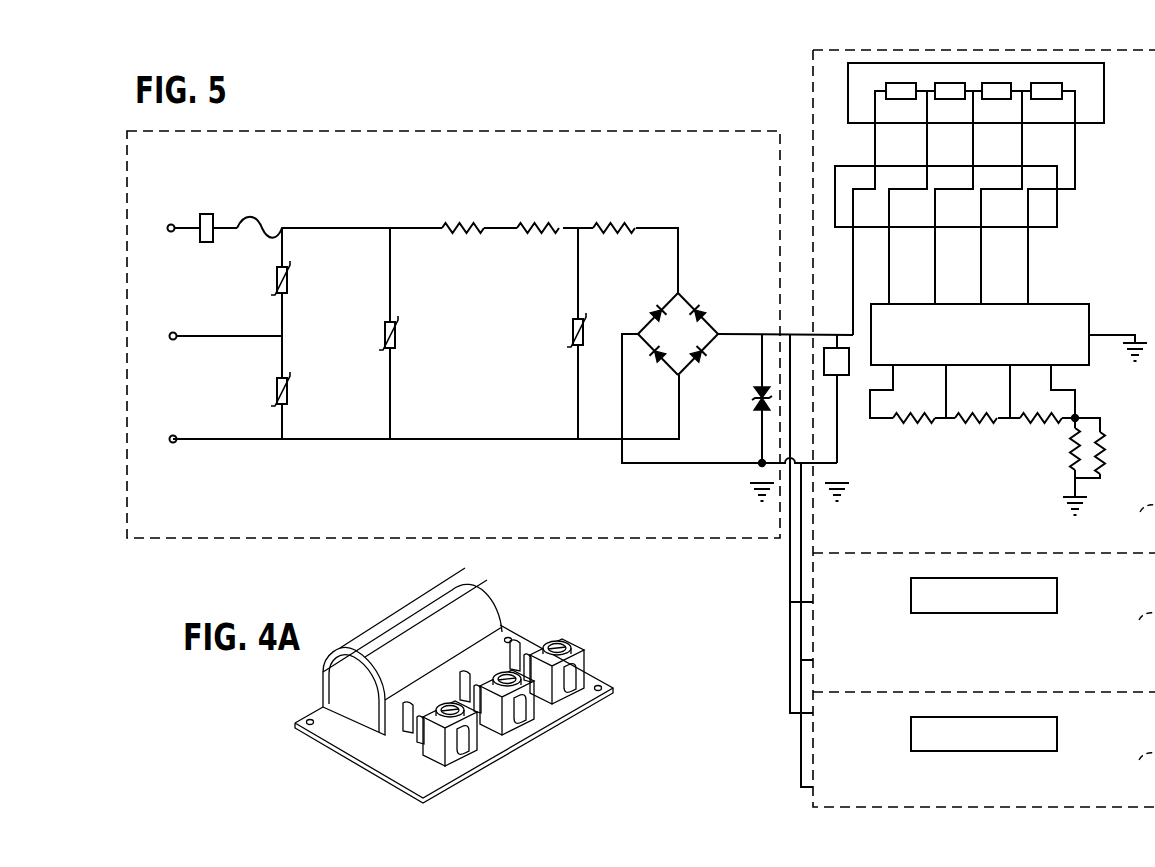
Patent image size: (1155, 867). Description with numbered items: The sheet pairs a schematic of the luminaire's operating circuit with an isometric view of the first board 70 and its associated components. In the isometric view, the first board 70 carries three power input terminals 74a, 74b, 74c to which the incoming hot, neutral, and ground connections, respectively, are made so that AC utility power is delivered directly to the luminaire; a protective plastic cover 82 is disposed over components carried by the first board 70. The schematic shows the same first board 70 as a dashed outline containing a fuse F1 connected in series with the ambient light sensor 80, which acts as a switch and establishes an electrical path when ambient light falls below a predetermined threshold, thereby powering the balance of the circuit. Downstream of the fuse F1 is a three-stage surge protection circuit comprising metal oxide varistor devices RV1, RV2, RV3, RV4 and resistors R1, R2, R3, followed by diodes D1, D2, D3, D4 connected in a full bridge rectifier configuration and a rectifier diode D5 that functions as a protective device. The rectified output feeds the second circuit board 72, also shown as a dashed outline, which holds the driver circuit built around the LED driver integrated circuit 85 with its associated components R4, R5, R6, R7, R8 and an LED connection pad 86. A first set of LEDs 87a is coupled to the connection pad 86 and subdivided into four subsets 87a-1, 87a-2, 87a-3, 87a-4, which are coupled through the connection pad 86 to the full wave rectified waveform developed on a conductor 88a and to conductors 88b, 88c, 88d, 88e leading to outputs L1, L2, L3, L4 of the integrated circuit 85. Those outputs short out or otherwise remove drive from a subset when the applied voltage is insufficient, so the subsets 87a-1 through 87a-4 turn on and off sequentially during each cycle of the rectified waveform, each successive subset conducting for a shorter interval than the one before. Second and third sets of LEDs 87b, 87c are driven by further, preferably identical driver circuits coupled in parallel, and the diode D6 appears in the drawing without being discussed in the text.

In FIG. 5, the first board 70 is at (413, 134).
In FIG. 4A, the first board 70 is at (598, 694).
In FIG. 5, the second circuit board 72 is at (812, 84).
In FIG. 5, the power input terminal 74a is at (171, 223).
In FIG. 4A, the power input terminal 74a is at (470, 752).
In FIG. 5, the power input terminal 74b is at (173, 331).
In FIG. 4A, the power input terminal 74b is at (505, 740).
In FIG. 5, the ground power terminal 74c is at (173, 434).
In FIG. 4A, the ground power terminal 74c is at (555, 705).
In FIG. 5, the ambient light sensor 80 is at (210, 213).
In FIG. 4A, the protective plastic cover 82 is at (405, 626).
In FIG. 5, the fuse F1 is at (262, 222).
In FIG. 5, the metal oxide varistor device RV1 is at (276, 280).
In FIG. 5, the metal oxide varistor device RV2 is at (276, 391).
In FIG. 5, the metal oxide varistor device RV3 is at (384, 335).
In FIG. 5, the metal oxide varistor device RV4 is at (571, 333).
In FIG. 5, the resistor R1 is at (469, 222).
In FIG. 5, the resistor R2 is at (548, 222).
In FIG. 5, the resistor R3 is at (622, 222).
In FIG. 5, the diode D1 is at (652, 315).
In FIG. 5, the diode D2 is at (700, 314).
In FIG. 5, the diode D3 is at (658, 358).
In FIG. 5, the diode D4 is at (702, 358).
In FIG. 5, the rectifier diode D5 is at (756, 398).
In FIG. 5, the diode D6 is at (844, 378).
In FIG. 5, the LED driver integrated circuit 85 is at (1090, 307).
In FIG. 5, the LED connection pad 86 is at (1048, 212).
In FIG. 5, the first set of LEDs 87a is at (898, 72).
In FIG. 5, the first LED subset 87a-1 is at (896, 88).
In FIG. 5, the second LED subset 87a-2 is at (950, 83).
In FIG. 5, the third LED subset 87a-3 is at (996, 83).
In FIG. 5, the fourth LED subset 87a-4 is at (1046, 83).
In FIG. 5, the second set of LEDs 87b is at (943, 614).
In FIG. 5, the third set of LEDs 87c is at (943, 752).
In FIG. 5, the conductor 88a is at (874, 136).
In FIG. 5, the conductor 88b is at (926, 136).
In FIG. 5, the conductor 88c is at (972, 136).
In FIG. 5, the conductor 88d is at (1021, 136).
In FIG. 5, the conductor 88e is at (1074, 136).
In FIG. 5, the output L1 is at (888, 300).
In FIG. 5, the output L2 is at (934, 300).
In FIG. 5, the output L3 is at (980, 300).
In FIG. 5, the output L4 is at (1027, 300).
In FIG. 5, the associated component R4 is at (905, 424).
In FIG. 5, the associated component R5 is at (966, 424).
In FIG. 5, the associated component R6 is at (1030, 424).
In FIG. 5, the associated component R7 is at (1071, 458).
In FIG. 5, the associated component R8 is at (1105, 454).